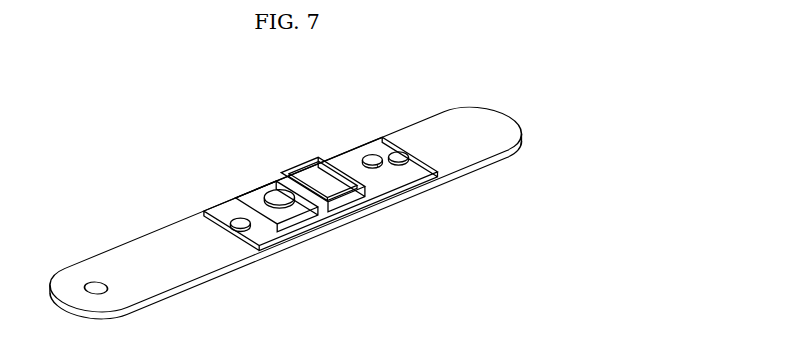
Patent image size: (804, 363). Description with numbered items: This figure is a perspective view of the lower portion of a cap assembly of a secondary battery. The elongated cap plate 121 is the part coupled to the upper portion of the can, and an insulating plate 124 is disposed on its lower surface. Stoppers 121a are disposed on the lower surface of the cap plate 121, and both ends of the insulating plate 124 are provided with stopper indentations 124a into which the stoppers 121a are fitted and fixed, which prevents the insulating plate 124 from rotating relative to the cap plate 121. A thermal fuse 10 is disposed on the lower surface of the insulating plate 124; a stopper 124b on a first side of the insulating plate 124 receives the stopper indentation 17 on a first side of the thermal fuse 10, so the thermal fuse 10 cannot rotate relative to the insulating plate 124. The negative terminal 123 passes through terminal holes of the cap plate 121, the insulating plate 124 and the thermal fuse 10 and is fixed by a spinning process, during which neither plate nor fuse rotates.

The thermal fuse 10 is at (318, 158).
The stopper indentation 17 is at (370, 156).
The cap plate 121 is at (149, 250).
The stopper 121a is at (402, 164).
The negative terminal 123 is at (272, 189).
The insulating plate 124 is at (377, 203).
The stopper indentation 124a is at (395, 153).
The stopper 124b is at (378, 167).